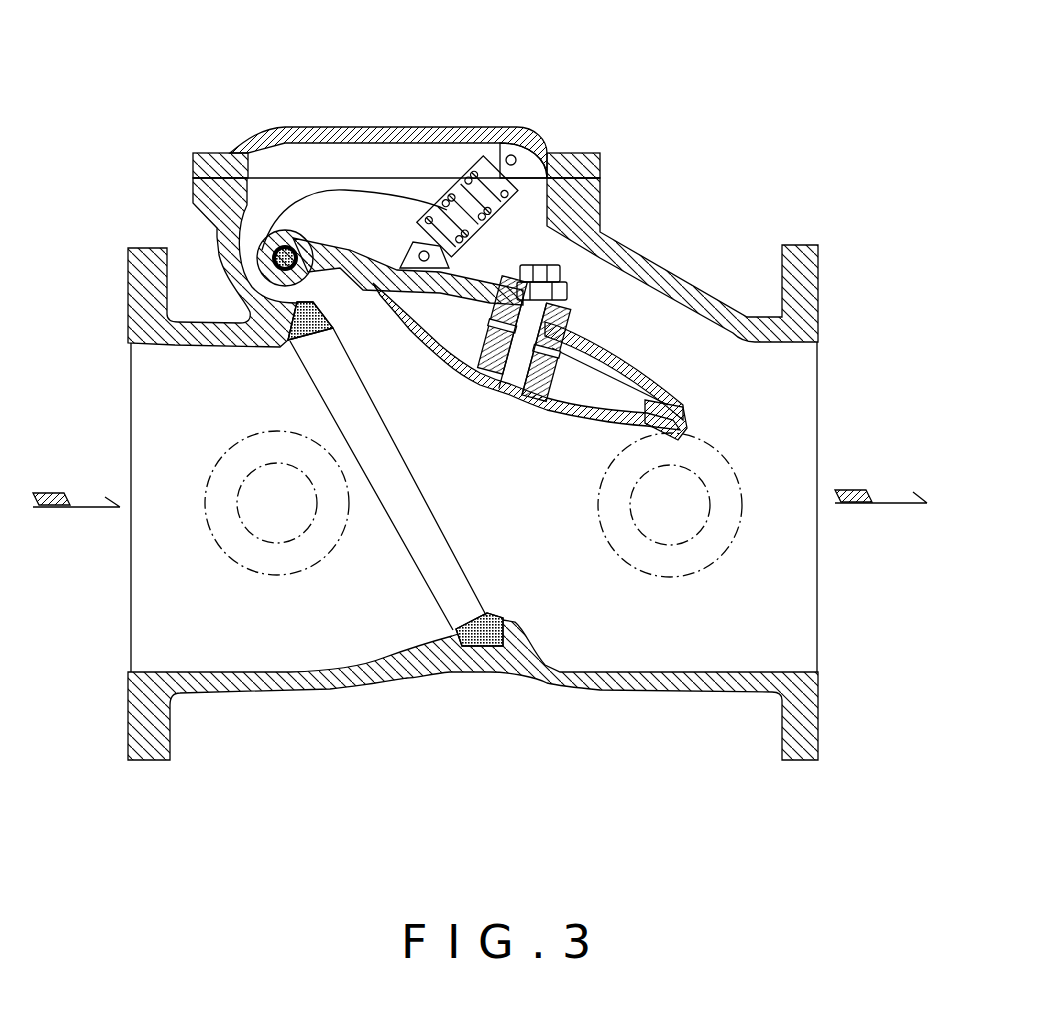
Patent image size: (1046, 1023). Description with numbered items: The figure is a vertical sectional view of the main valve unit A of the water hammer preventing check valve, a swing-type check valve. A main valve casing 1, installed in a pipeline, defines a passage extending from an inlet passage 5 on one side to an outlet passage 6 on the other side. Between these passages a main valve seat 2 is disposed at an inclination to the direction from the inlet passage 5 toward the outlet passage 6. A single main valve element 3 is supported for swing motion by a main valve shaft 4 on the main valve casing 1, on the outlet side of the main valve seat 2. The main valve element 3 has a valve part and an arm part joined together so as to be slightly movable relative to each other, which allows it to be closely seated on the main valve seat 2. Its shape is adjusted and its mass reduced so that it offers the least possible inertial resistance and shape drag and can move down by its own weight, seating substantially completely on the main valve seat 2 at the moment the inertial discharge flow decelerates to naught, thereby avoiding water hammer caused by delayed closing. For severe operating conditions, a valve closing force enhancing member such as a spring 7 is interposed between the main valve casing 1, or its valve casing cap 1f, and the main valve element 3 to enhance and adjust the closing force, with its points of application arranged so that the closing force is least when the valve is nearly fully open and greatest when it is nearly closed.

The main valve unit A is at (645, 227).
The main valve casing 1 is at (670, 283).
The valve casing cap 1f is at (573, 165).
The main valve seat 2 is at (505, 630).
The main valve element 3 is at (550, 400).
The main valve shaft 4 is at (266, 246).
The inlet passage 5 is at (167, 618).
The outlet passage 6 is at (760, 603).
The spring 7 is at (459, 165).